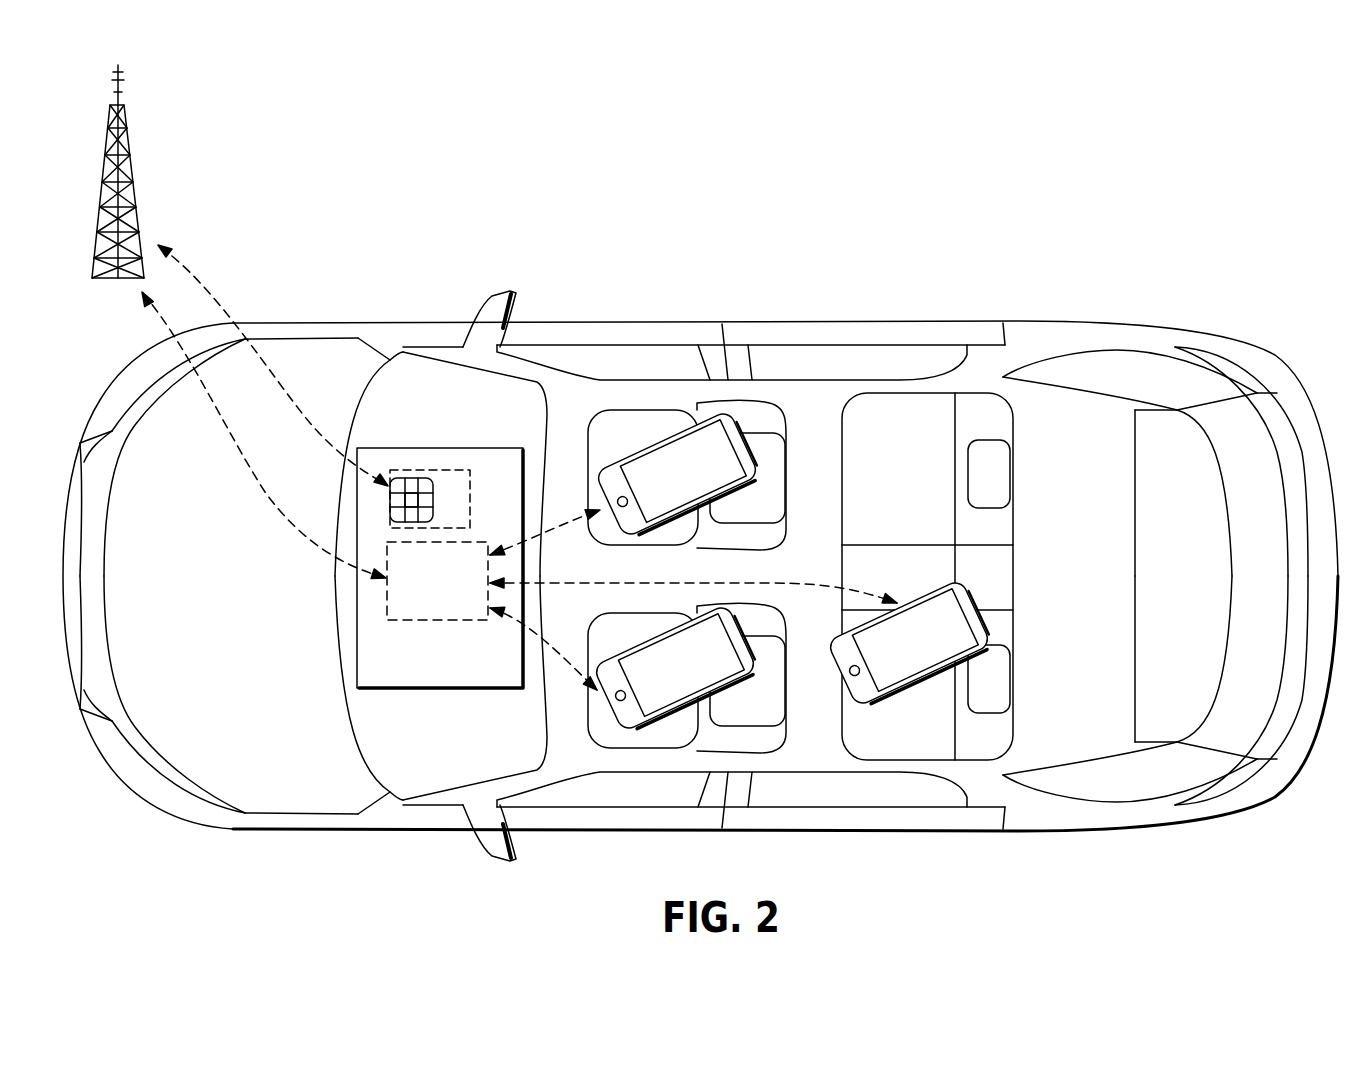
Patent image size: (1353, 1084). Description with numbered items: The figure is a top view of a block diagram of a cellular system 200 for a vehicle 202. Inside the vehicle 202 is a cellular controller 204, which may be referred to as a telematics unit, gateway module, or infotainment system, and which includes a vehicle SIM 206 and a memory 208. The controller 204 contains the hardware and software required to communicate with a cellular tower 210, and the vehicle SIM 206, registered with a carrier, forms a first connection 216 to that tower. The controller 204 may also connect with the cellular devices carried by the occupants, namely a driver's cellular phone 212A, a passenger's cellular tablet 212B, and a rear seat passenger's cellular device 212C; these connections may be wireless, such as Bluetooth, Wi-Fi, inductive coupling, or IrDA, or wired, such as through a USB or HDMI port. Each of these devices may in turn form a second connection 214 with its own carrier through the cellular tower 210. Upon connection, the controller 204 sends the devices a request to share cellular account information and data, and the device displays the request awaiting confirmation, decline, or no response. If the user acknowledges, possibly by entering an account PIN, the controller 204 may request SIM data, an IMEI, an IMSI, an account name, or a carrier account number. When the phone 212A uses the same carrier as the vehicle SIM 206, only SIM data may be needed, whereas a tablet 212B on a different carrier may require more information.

The cellular system 200 is at (700, 463).
The vehicle 202 is at (802, 323).
The cellular controller 204 is at (404, 551).
The vehicle SIM 206 is at (428, 470).
The memory 208 is at (462, 624).
The cellular tower 210 is at (132, 184).
The driver's cellular phone 212A is at (625, 668).
The passenger's cellular tablet 212B is at (742, 644).
The rear seat passenger's cellular device 212C is at (626, 482).
The second connection 214 is at (160, 320).
The first connection 216 is at (216, 288).